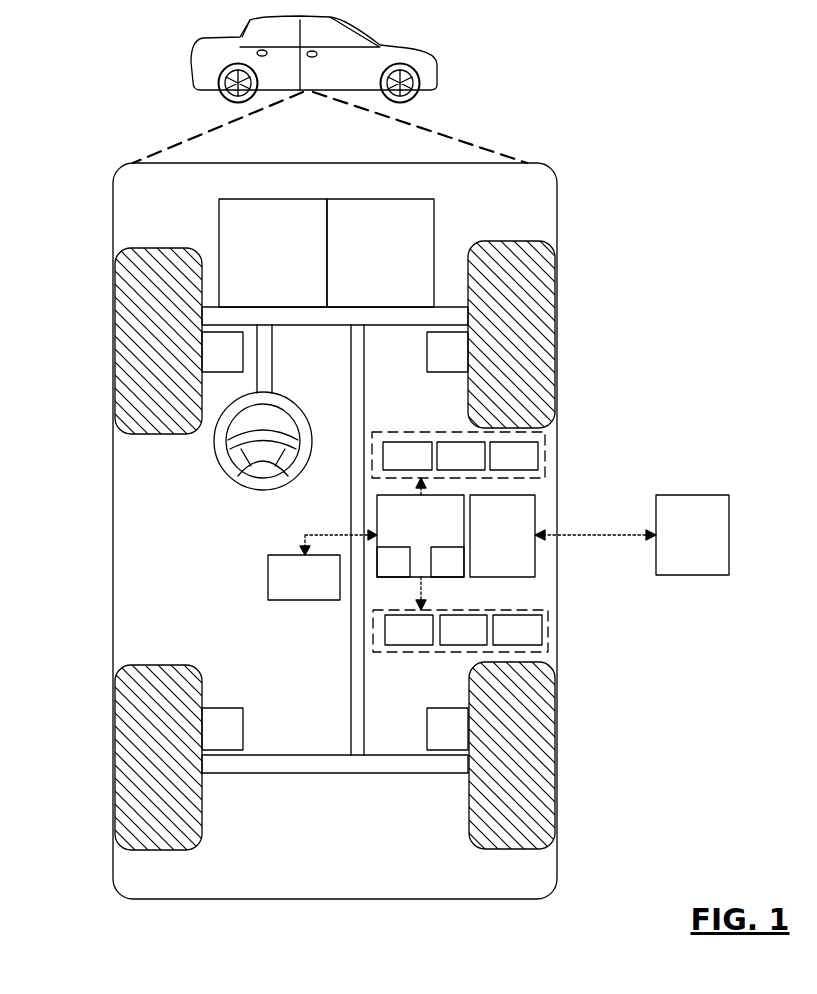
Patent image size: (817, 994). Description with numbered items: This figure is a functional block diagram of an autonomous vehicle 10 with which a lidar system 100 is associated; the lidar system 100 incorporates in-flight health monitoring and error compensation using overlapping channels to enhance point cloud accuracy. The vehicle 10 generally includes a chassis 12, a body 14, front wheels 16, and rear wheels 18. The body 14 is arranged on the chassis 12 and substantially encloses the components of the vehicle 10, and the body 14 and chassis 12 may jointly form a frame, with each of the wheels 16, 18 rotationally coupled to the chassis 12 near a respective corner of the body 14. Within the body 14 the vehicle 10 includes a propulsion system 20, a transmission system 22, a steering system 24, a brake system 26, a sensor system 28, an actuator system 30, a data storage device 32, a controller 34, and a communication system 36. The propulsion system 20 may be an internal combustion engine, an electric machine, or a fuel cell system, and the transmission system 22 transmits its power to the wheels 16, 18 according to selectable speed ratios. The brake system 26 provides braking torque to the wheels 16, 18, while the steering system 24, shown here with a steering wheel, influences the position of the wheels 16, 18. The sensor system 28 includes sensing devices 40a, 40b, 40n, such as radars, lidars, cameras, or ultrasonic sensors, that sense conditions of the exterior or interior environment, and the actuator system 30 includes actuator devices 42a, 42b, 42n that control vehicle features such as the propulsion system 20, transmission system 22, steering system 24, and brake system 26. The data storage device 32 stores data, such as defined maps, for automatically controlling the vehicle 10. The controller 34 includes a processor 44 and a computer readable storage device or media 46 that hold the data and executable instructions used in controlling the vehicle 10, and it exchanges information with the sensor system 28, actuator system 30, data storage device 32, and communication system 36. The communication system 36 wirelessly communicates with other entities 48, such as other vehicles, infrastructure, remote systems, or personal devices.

The vehicle 10 is at (190, 72).
The lidar system 100 is at (583, 176).
The chassis 12 is at (350, 690).
The body 14 is at (113, 518).
The front wheels 16 is at (153, 248).
The rear wheels 18 is at (172, 850).
The propulsion system 20 is at (273, 253).
The transmission system 22 is at (380, 253).
The steering system 24 is at (294, 350).
The brake system 26 is at (335, 541).
The sensor system 28 is at (400, 432).
The actuator system 30 is at (423, 652).
The data storage device 32 is at (322, 565).
The controller 34 is at (420, 544).
The communication system 36 is at (563, 536).
The sensing device 40a is at (407, 456).
The sensing device 40b is at (461, 456).
The sensing device 40n is at (514, 456).
The actuator device 42a is at (409, 630).
The actuator device 42b is at (463, 630).
The actuator device 42n is at (517, 630).
The processor 44 is at (393, 562).
The computer readable storage device or media 46 is at (447, 562).
The other entities 48 is at (692, 535).